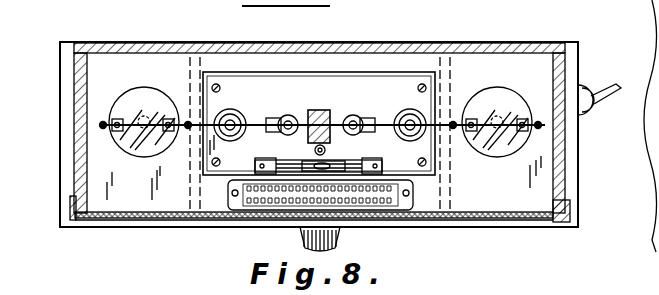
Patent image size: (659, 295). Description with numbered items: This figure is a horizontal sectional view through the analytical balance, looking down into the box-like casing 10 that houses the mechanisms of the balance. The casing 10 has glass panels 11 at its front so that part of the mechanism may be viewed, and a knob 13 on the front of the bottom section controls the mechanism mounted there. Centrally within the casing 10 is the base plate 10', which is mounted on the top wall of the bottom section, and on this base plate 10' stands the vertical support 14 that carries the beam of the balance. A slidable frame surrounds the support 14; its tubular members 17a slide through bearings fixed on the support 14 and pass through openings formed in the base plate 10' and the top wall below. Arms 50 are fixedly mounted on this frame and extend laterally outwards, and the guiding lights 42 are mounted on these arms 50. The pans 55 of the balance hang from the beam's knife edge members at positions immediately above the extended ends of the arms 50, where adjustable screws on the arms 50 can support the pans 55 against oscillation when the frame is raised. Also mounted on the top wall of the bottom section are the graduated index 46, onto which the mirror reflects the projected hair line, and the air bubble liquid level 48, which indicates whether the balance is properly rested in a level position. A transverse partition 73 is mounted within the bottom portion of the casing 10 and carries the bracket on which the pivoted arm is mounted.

The casing 10 is at (326, 134).
The base plate 10' is at (333, 94).
The glass panels 11 is at (163, 219).
The knob 13 is at (336, 238).
The vertical support 14 is at (320, 110).
The tubular members 17a is at (288, 117).
The guiding lights 42 is at (189, 121).
The index 46 is at (392, 205).
The air bubble liquid level 48 is at (360, 158).
The arms 50 is at (236, 120).
The pans 55 is at (130, 99).
The transverse partition 73 is at (452, 176).